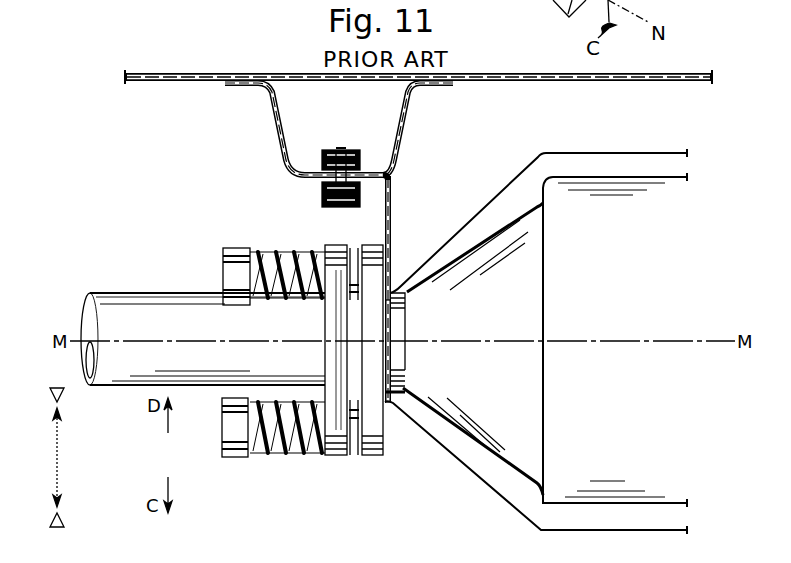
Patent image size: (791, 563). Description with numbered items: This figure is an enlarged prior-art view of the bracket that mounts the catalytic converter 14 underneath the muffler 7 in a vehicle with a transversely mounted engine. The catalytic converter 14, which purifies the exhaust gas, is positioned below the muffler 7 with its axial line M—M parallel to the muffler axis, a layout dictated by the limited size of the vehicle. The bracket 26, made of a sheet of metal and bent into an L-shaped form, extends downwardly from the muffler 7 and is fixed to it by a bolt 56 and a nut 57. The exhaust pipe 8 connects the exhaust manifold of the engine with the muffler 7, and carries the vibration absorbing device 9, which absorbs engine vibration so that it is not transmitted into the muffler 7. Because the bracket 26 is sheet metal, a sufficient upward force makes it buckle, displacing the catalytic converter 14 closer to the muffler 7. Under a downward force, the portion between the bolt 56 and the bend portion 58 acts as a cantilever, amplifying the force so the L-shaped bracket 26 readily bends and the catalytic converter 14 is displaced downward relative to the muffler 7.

The muffler 7 is at (508, 82).
The exhaust pipe 8 is at (154, 292).
The vibration absorbing device 9 is at (243, 248).
The catalytic converter 14 is at (590, 153).
The bracket 26 is at (391, 216).
The bolt 56 is at (358, 200).
The nut 57 is at (350, 152).
The bend portion 58 is at (394, 182).